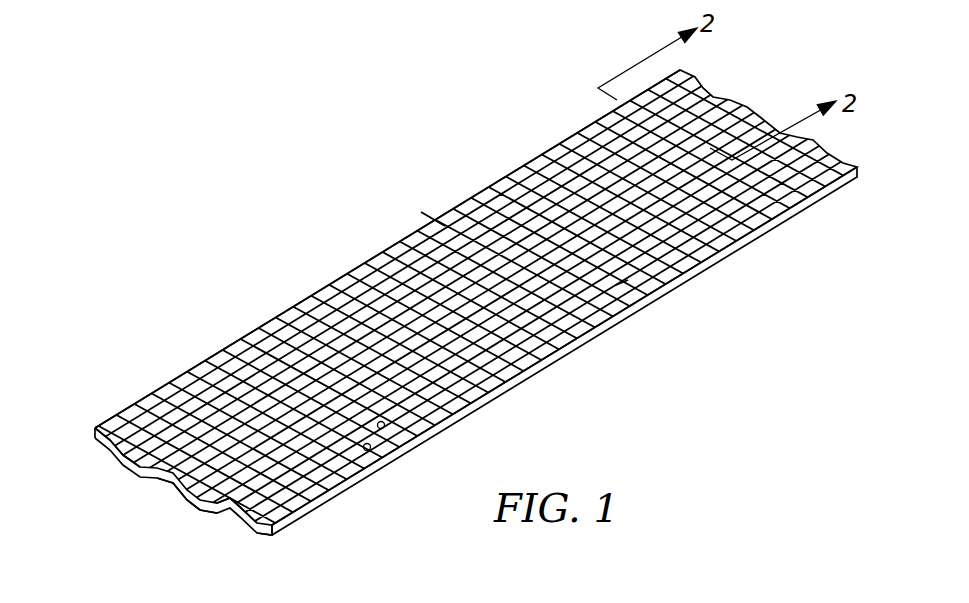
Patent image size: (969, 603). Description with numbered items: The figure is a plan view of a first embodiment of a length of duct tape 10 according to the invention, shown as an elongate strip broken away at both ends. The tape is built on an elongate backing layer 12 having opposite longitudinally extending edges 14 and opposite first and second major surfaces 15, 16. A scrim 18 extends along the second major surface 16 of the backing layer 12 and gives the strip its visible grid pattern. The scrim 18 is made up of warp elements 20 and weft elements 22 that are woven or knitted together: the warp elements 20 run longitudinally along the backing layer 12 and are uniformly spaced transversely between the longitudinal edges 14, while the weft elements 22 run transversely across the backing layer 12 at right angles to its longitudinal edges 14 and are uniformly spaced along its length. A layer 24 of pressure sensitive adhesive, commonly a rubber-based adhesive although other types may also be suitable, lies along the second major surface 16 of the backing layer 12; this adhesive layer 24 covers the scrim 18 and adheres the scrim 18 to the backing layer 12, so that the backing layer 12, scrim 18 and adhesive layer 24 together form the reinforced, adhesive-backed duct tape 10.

The duct tape 10 is at (746, 58).
The backing layer 12 is at (249, 535).
The longitudinally extending edges 14 is at (527, 373).
The first major surface 15 is at (203, 507).
The second major surface 16 is at (233, 513).
The scrim 18 is at (636, 291).
The warp elements 20 is at (383, 430).
The weft elements 22 is at (447, 236).
The layer of pressure sensitive adhesive 24 is at (113, 444).